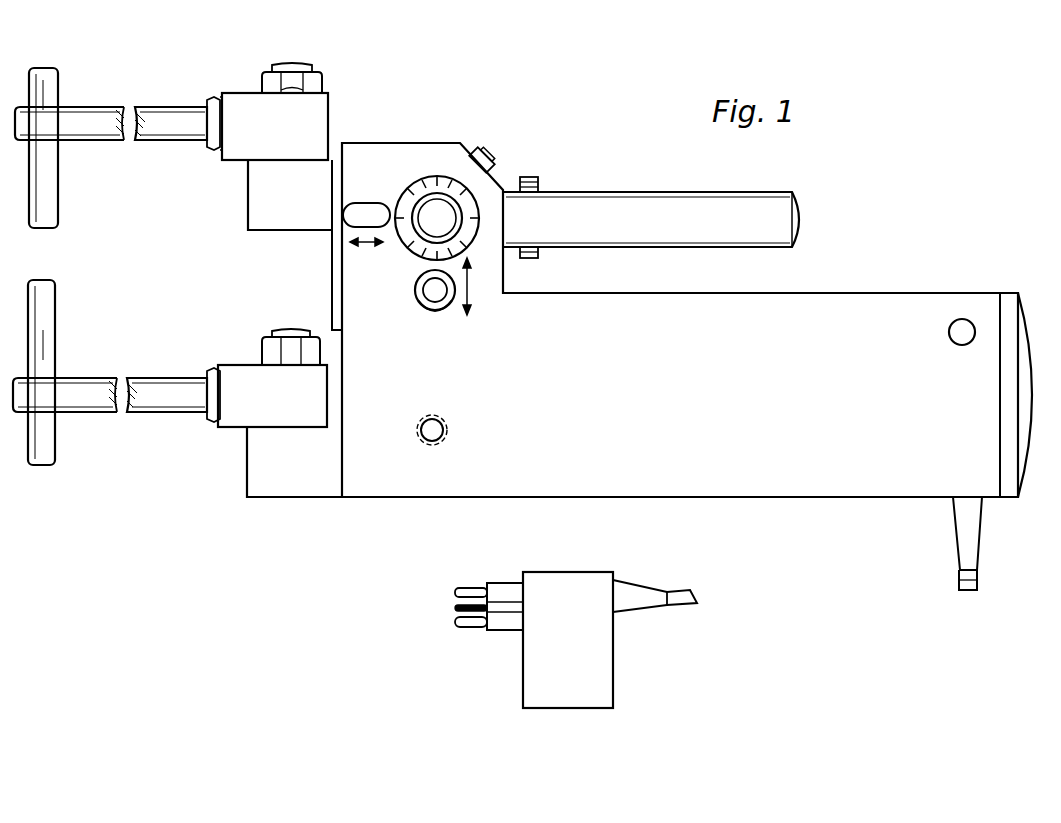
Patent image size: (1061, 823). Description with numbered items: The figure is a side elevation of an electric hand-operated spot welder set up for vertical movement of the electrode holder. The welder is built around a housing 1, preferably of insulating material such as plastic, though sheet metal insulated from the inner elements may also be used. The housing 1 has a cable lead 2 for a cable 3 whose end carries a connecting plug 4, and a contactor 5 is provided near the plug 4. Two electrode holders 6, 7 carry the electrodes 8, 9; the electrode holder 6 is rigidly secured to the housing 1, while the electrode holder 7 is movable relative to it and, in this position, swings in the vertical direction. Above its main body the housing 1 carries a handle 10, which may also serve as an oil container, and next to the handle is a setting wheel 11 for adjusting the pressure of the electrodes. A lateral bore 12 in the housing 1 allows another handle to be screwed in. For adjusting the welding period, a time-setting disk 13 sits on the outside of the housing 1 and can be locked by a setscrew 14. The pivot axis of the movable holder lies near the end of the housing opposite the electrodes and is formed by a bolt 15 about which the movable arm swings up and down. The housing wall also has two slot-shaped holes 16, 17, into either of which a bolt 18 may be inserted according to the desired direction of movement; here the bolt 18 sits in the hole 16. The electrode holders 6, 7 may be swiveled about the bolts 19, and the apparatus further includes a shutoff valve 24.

The housing 1 is at (876, 497).
The cable lead 2 is at (643, 587).
The cable 3 is at (680, 608).
The connecting plug 4 is at (500, 632).
The contactor 5 is at (607, 665).
The electrode holder 6 is at (238, 378).
The electrode holder 7 is at (227, 152).
The electrode 8 is at (50, 337).
The electrode 9 is at (58, 192).
The handle 10 is at (790, 193).
The setting wheel 11 is at (530, 177).
The lateral bore 12 is at (432, 443).
The time-setting disk 13 is at (430, 183).
The setscrew 14 is at (427, 210).
The bolt 15 is at (963, 330).
The slot-shaped hole 16 is at (445, 309).
The slot-shaped hole 17 is at (367, 203).
The bolt 18 is at (418, 302).
The bolts 19 is at (290, 71).
The shutoff valve 24 is at (488, 152).